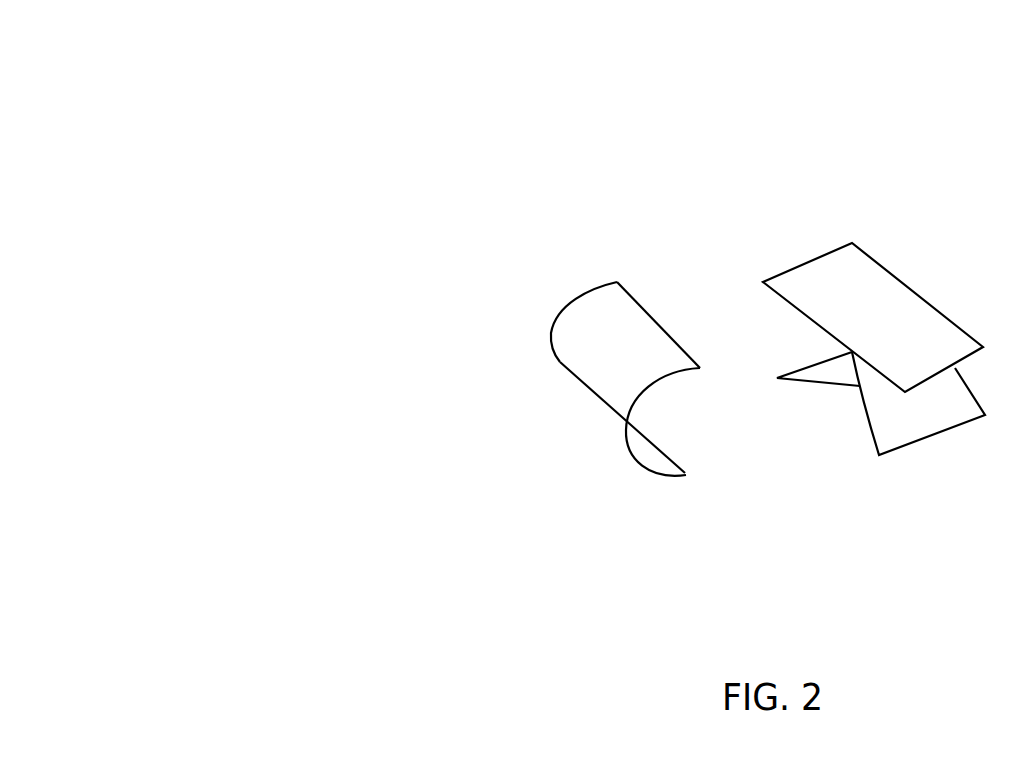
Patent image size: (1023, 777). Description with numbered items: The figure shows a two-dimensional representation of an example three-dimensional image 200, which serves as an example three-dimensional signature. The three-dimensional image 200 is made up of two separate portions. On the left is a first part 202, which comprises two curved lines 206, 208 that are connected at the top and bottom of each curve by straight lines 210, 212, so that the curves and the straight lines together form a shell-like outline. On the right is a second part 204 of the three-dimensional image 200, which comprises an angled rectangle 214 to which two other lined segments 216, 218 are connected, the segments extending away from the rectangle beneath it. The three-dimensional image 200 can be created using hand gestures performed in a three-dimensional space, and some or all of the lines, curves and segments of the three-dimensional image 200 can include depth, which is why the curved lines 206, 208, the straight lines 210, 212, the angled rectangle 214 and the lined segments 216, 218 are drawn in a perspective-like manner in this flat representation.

The 3D image 200 is at (168, 58).
The first part 202 is at (550, 255).
The second part 204 is at (800, 235).
The curved line 206 is at (558, 310).
The curved line 208 is at (625, 443).
The straight line 210 is at (655, 312).
The straight line 212 is at (572, 383).
The angled rectangle 214 is at (892, 323).
The lined segment 216 is at (840, 363).
The lined segment 218 is at (930, 408).